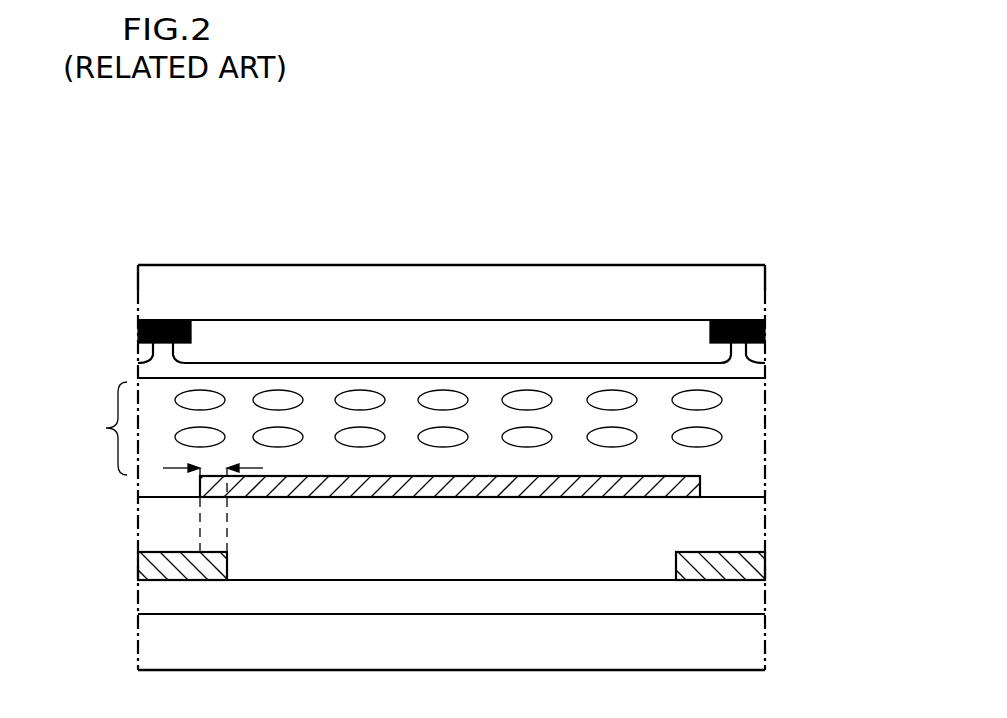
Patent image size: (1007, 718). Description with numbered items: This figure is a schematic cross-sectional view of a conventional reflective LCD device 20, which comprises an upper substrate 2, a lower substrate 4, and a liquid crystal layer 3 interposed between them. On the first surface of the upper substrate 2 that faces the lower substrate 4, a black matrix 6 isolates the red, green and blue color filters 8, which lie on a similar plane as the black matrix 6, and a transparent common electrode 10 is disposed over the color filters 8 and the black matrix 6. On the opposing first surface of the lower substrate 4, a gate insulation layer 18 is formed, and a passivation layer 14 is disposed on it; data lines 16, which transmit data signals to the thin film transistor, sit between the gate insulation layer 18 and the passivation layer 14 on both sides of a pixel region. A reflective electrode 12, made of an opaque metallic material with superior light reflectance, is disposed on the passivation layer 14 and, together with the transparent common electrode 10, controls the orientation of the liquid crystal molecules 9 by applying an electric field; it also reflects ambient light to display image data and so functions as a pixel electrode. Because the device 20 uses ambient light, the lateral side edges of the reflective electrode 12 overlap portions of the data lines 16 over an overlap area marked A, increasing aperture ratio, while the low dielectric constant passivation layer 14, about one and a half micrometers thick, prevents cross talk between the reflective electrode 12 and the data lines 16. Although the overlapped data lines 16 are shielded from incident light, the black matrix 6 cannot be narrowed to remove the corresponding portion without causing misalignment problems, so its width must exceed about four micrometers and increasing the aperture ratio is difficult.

The upper substrate 2 is at (451, 292).
The liquid crystal layer 3 is at (424, 437).
The lower substrate 4 is at (451, 642).
The black matrix 6 is at (166, 340).
The color filters 8 is at (247, 340).
The liquid crystal molecules 9 is at (530, 392).
The transparent common electrode 10 is at (750, 372).
The reflective electrode 12 is at (703, 488).
The passivation layer 14 is at (712, 538).
The data lines 16 is at (150, 567).
The gate insulation layer 18 is at (755, 598).
The reflective LCD device 20 is at (643, 240).